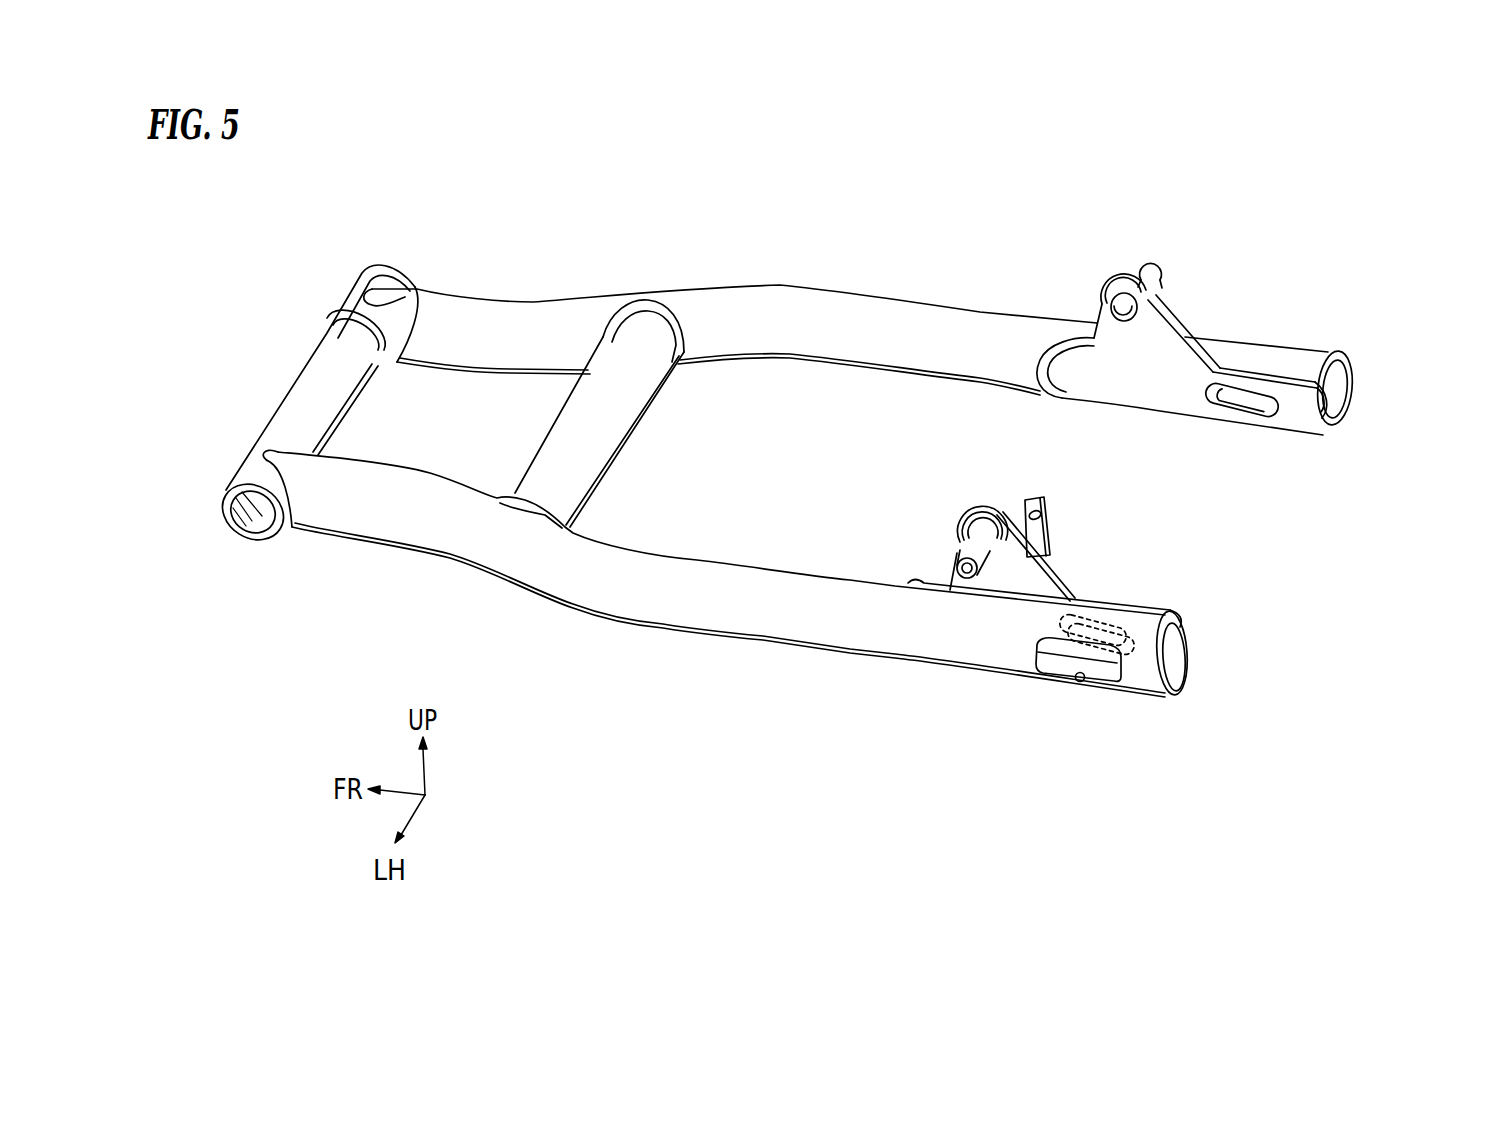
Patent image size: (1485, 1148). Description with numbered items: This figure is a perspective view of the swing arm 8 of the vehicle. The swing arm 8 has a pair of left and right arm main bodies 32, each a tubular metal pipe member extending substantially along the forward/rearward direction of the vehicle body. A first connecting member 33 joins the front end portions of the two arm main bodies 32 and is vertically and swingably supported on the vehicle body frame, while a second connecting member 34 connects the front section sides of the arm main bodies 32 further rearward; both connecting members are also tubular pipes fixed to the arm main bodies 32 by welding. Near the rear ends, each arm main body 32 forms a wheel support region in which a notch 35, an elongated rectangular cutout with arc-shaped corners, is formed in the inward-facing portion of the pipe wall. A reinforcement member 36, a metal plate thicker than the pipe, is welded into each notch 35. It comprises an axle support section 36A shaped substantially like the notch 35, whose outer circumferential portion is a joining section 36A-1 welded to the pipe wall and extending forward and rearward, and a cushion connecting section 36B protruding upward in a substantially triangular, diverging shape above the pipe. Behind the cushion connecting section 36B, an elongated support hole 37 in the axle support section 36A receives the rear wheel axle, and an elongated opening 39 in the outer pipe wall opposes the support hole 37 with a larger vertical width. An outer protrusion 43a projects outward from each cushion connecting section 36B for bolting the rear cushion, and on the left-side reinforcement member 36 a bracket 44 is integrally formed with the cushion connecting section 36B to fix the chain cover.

The swing arm 8 is at (908, 252).
The arm main body 32 is at (783, 293).
The first connecting member 33 is at (298, 400).
The second connecting member 34 is at (565, 410).
The notch 35 is at (1350, 412).
The reinforcement member 36 is at (1206, 355).
The axle support section 36A is at (1287, 430).
The joining section 36A-1 is at (1068, 358).
The cushion connecting section 36B is at (1168, 316).
The support hole 37 is at (1240, 408).
The opening 39 is at (1079, 682).
The outer protrusion 43a is at (1152, 266).
The bracket 44 is at (1035, 497).